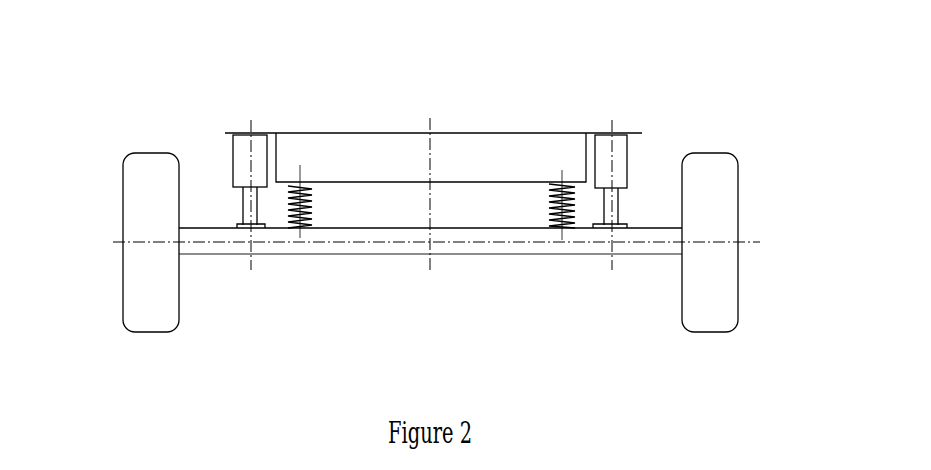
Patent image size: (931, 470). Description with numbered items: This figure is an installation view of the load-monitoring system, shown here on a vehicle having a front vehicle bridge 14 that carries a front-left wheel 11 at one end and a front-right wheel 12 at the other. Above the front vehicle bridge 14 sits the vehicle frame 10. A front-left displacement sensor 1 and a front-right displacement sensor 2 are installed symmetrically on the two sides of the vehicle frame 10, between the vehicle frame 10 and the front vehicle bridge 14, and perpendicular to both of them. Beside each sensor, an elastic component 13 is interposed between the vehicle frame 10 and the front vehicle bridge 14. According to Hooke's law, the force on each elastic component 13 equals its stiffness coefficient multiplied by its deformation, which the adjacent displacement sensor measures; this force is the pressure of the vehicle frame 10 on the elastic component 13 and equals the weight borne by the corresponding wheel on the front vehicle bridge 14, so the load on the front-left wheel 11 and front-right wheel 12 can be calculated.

The front-left displacement sensor 1 is at (235, 140).
The front-right displacement sensor 2 is at (622, 158).
The vehicle frame 10 is at (370, 148).
The front-left wheel 11 is at (145, 187).
The front-right wheel 12 is at (713, 202).
The elastic component 13 is at (305, 205).
The front vehicle bridge 14 is at (465, 245).